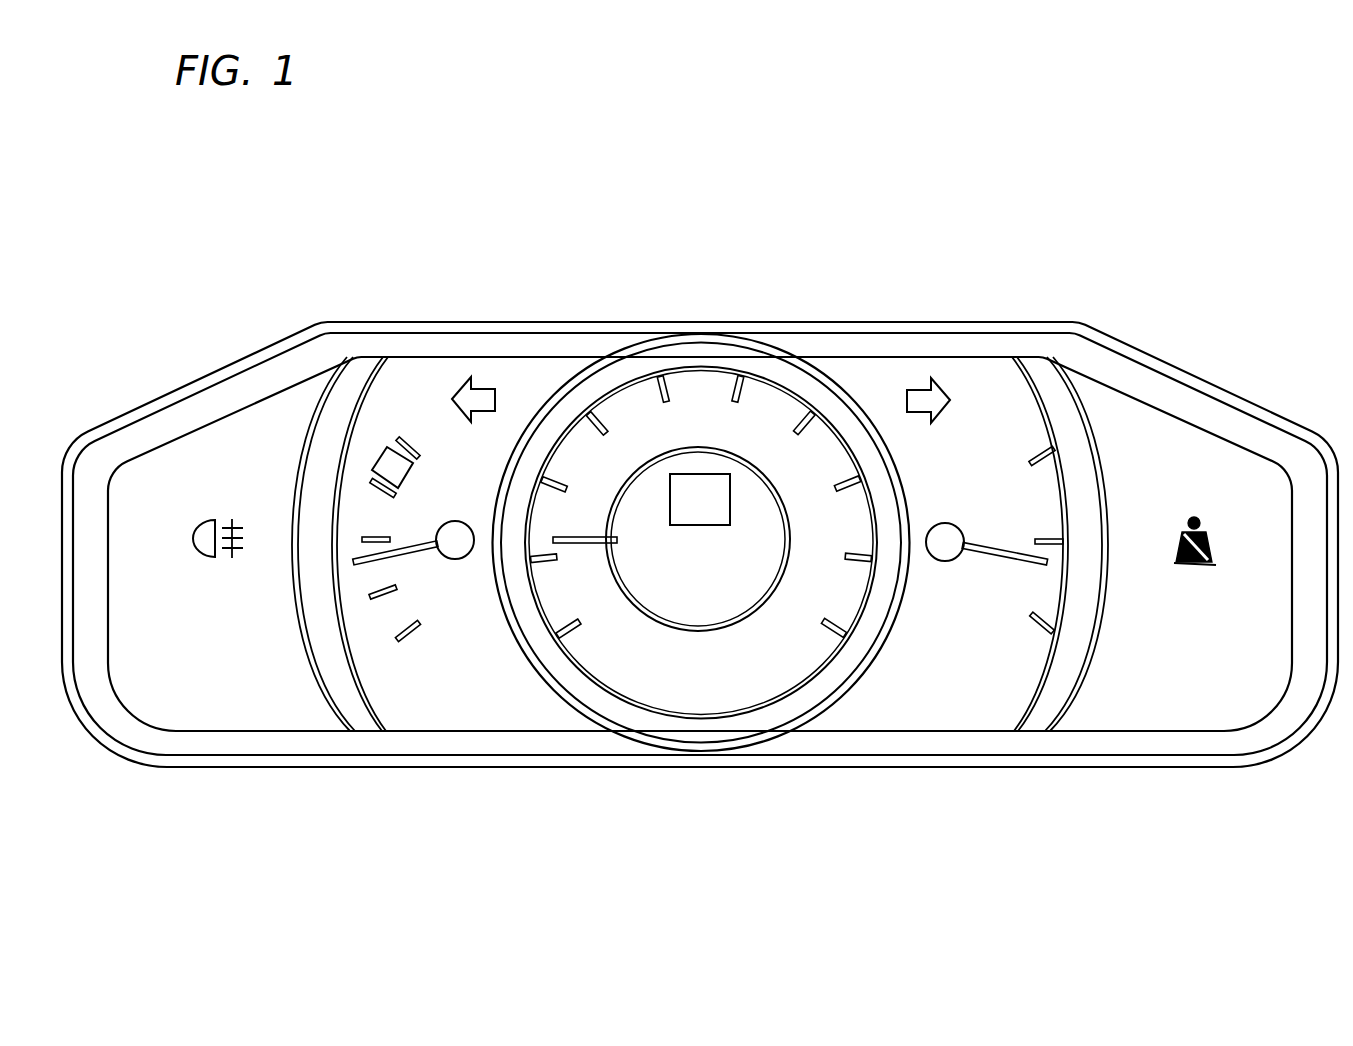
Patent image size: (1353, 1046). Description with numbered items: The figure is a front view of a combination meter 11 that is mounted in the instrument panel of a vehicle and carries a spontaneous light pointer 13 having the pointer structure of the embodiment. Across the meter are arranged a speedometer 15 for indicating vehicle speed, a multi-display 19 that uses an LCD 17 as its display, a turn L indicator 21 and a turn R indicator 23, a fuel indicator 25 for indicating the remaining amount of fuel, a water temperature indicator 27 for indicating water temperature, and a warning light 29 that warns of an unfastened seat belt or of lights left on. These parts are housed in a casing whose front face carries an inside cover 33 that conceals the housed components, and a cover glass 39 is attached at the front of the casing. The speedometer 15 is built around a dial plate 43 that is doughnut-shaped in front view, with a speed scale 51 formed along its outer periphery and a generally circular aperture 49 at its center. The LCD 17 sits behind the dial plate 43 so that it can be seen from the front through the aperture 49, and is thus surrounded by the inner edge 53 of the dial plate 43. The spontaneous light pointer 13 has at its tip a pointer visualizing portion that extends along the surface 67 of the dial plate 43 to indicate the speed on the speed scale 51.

The combination meter 11 is at (110, 326).
The spontaneous light pointer 13 is at (567, 560).
The speedometer 15 is at (713, 322).
The LCD 17 is at (700, 622).
The multi-display 19 is at (736, 630).
The turn L indicator 21 is at (482, 398).
The turn R indicator 23 is at (922, 400).
The fuel indicator 25 is at (958, 450).
The water temperature indicator 27 is at (423, 417).
The warning light 29 is at (196, 518).
The inside cover 33 is at (345, 705).
The cover glass 39 is at (93, 737).
The dial plate 43 is at (773, 403).
The aperture 49 is at (620, 503).
The speed scale 51 is at (589, 483).
The inner edge 53 is at (644, 604).
The surface 67 is at (550, 603).